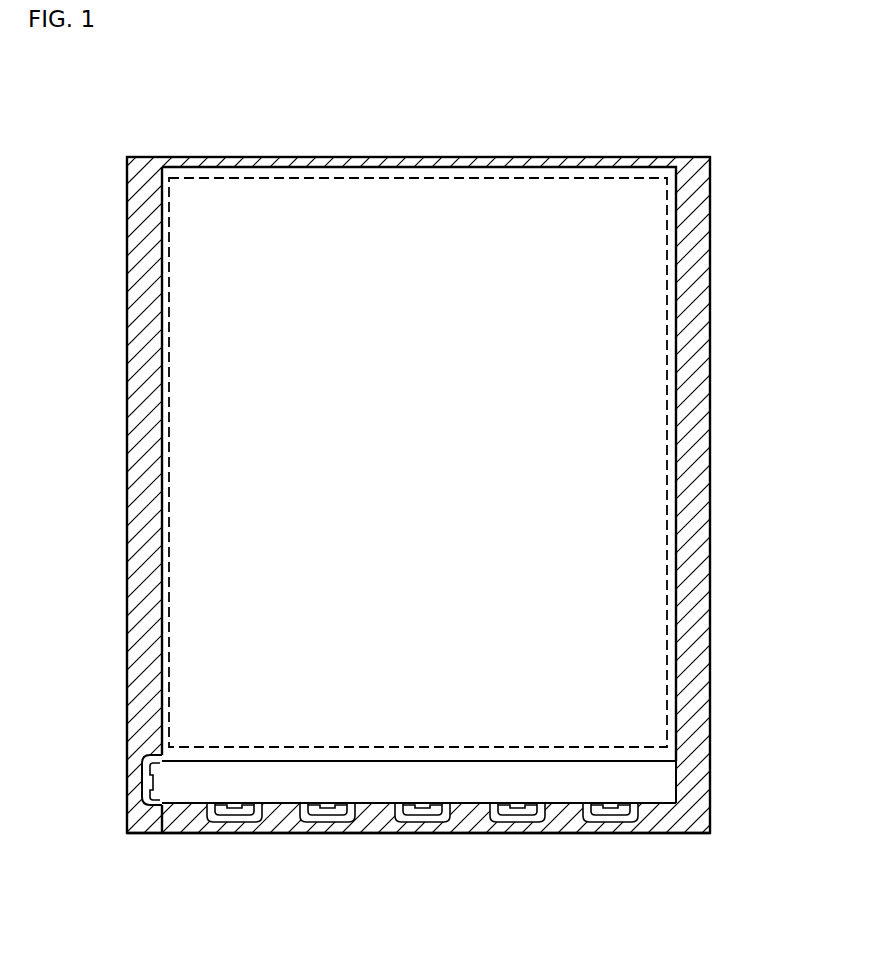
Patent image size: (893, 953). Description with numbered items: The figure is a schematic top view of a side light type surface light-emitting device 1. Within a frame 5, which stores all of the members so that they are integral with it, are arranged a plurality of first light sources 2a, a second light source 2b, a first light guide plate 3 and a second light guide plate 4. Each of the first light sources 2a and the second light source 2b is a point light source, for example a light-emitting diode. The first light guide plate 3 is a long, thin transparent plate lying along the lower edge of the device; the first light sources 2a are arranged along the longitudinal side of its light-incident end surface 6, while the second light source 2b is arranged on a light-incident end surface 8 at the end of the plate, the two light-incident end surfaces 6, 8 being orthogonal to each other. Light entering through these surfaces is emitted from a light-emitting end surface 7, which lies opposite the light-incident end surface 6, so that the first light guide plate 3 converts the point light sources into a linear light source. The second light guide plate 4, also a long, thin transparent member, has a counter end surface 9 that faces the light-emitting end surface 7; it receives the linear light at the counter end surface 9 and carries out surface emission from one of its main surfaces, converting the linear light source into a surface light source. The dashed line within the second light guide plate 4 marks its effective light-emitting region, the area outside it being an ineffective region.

The surface light-emitting device 1 is at (641, 128).
The first light sources 2a is at (417, 806).
The second light source 2b is at (150, 789).
The first light guide plate 3 is at (371, 797).
The second light guide plate 4 is at (652, 669).
The frame 5 is at (185, 812).
The light-incident end surface 6 is at (573, 800).
The light-emitting end surface 7 is at (643, 760).
The light-incident end surface 8 is at (147, 774).
The counter end surface 9 is at (660, 763).